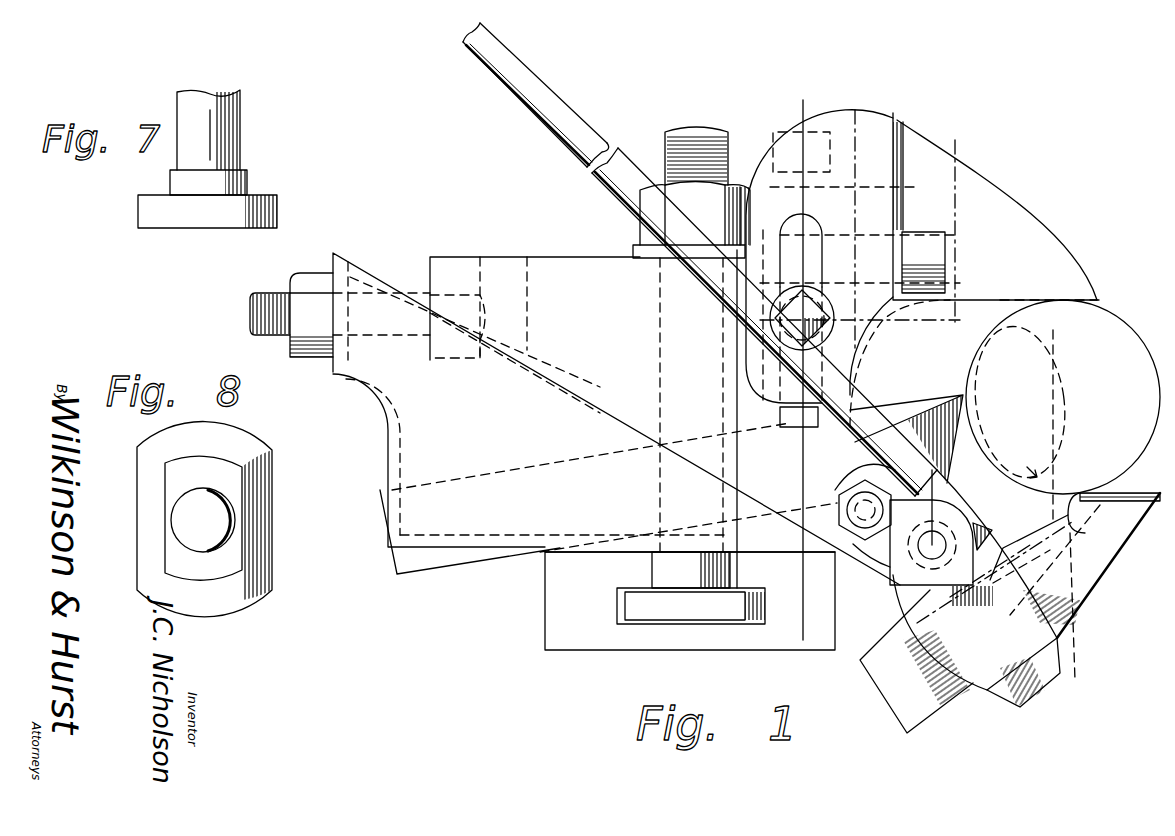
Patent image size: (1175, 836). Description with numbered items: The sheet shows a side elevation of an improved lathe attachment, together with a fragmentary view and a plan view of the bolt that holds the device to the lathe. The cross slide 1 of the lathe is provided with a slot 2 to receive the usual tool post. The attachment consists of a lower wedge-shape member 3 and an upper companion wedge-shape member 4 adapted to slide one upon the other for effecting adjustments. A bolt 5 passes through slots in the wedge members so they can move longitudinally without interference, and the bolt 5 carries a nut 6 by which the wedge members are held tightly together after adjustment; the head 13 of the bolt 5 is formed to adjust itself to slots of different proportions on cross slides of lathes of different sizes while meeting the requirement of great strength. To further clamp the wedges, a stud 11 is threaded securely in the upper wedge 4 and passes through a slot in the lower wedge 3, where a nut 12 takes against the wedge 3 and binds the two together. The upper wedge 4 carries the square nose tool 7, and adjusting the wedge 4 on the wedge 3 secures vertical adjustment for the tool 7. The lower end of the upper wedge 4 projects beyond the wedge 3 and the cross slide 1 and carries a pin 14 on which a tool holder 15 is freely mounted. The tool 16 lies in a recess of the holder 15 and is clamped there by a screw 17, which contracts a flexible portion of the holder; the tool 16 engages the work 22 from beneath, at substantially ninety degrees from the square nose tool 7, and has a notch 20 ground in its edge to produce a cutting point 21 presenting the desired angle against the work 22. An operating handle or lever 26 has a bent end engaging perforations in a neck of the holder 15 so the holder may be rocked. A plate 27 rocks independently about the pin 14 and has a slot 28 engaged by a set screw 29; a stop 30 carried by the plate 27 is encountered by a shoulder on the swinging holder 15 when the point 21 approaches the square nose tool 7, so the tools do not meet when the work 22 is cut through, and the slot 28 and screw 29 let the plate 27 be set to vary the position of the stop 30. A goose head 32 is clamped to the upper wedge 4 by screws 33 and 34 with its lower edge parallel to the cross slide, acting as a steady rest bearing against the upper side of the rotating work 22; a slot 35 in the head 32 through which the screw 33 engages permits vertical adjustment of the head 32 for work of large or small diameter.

In FIG. 1, the cross slide 1 is at (546, 612).
In FIG. 1, the slot 2 is at (628, 622).
In FIG. 1, the lower wedge-shape member 3 is at (378, 430).
In FIG. 1, the upper companion wedge-shape member 4 is at (503, 258).
In FIG. 7, the bolt 5 is at (241, 142).
In FIG. 8, the bolt 5 is at (216, 522).
In FIG. 1, the bolt 5 is at (690, 115).
In FIG. 1, the nut 6 is at (733, 186).
In FIG. 1, the square nose tool 7 is at (905, 410).
In FIG. 1, the stud 11 is at (250, 314).
In FIG. 1, the nut 12 is at (312, 278).
In FIG. 7, the head 13 is at (166, 226).
In FIG. 8, the head 13 is at (146, 542).
In FIG. 1, the head 13 is at (712, 606).
In FIG. 1, the pin 14 is at (915, 582).
In FIG. 1, the tool holder 15 is at (962, 686).
In FIG. 1, the tool 16 is at (1133, 552).
In FIG. 1, the screw 17 is at (1042, 683).
In FIG. 1, the notch 20 is at (1120, 514).
In FIG. 1, the cutting point 21 is at (1071, 492).
In FIG. 1, the work 22 is at (1063, 410).
In FIG. 1, the operating handle or lever 26 is at (532, 128).
In FIG. 1, the plate 27 is at (883, 560).
In FIG. 1, the slot 28 is at (855, 482).
In FIG. 1, the screw 29 is at (848, 516).
In FIG. 1, the stop 30 is at (977, 518).
In FIG. 1, the goose head 32 is at (985, 186).
In FIG. 1, the screw 33 is at (820, 310).
In FIG. 1, the screw 34 is at (935, 255).
In FIG. 1, the slot 35 is at (818, 268).